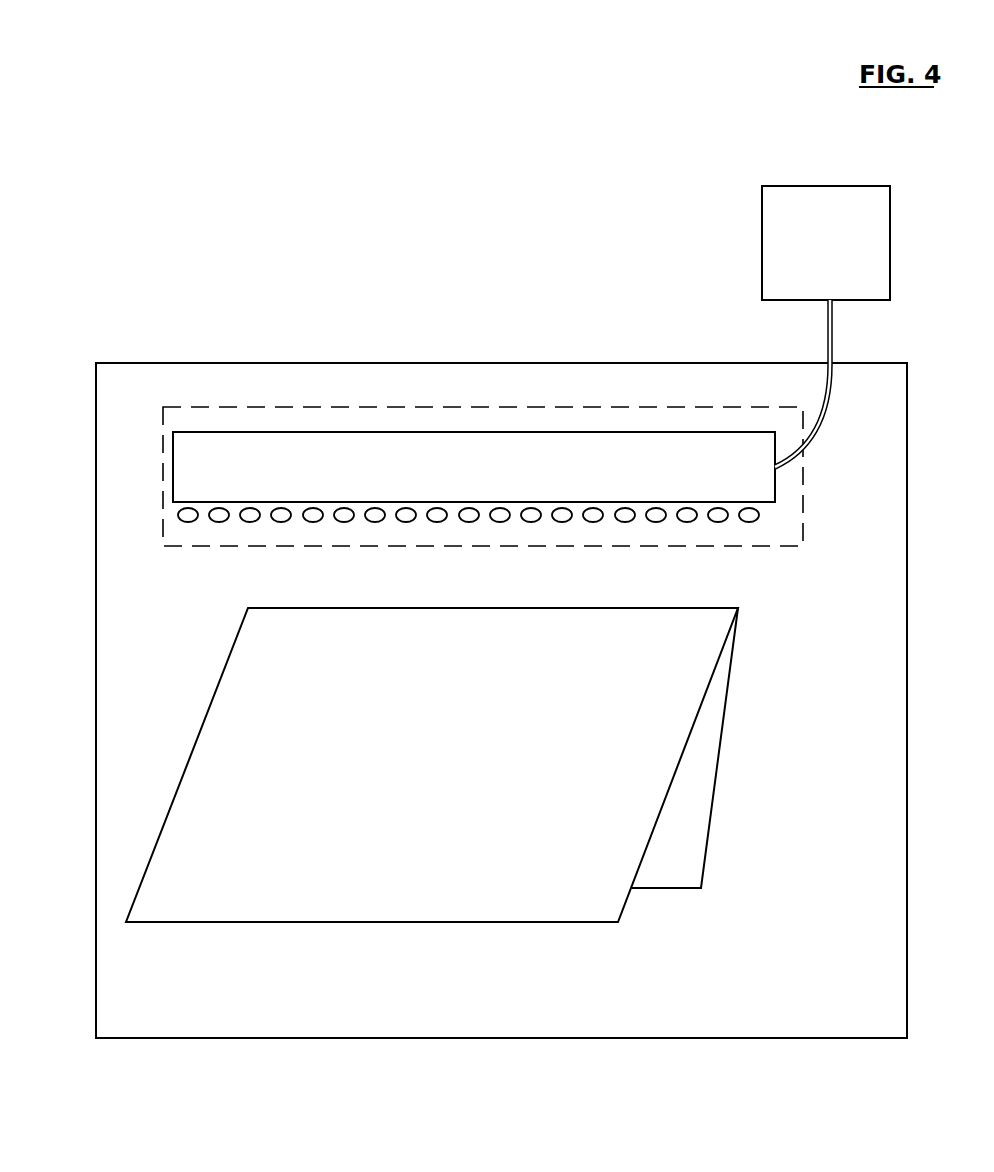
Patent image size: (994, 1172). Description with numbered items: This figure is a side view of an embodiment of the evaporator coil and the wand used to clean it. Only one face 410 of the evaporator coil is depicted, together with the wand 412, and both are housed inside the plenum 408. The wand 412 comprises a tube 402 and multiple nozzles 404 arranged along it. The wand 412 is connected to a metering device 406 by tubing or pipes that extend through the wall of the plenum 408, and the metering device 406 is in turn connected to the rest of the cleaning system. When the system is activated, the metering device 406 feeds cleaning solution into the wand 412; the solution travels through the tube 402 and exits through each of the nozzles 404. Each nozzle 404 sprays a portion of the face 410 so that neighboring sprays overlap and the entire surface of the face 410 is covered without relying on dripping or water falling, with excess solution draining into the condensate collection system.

The tube 402 is at (474, 467).
The nozzles 404 is at (240, 521).
The metering device 406 is at (826, 326).
The plenum 408 is at (205, 363).
The face of the evaporator coil 410 is at (432, 765).
The wand 412 is at (803, 483).